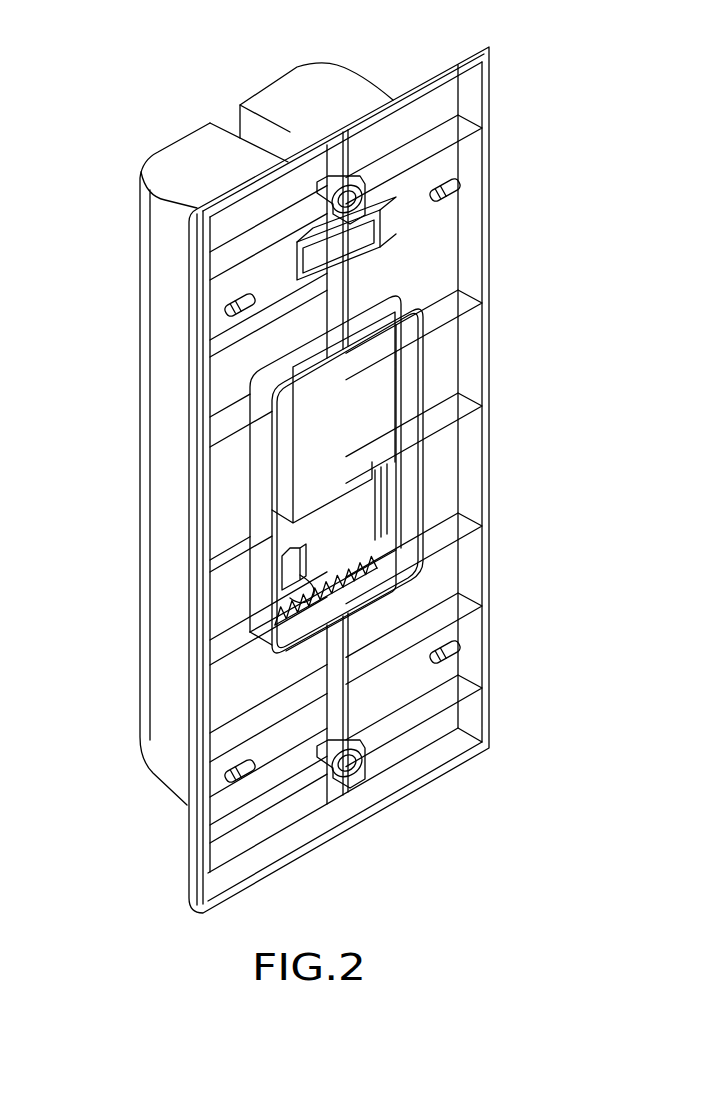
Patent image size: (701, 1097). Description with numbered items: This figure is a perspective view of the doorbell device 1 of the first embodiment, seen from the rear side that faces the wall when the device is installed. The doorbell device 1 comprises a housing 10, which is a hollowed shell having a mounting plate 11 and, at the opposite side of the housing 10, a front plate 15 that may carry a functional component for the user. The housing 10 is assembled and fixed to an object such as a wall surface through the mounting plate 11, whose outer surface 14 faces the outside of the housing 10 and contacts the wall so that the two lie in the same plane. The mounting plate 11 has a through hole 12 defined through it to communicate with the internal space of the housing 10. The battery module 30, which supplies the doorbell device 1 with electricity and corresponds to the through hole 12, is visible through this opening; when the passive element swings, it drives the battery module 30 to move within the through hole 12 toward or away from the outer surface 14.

The doorbell device 1 is at (137, 99).
The housing 10 is at (302, 82).
The mounting plate 11 is at (468, 97).
The through hole 12 is at (387, 504).
The outer surface 14 is at (488, 167).
The front plate 15 is at (160, 150).
The battery module 30 is at (373, 390).